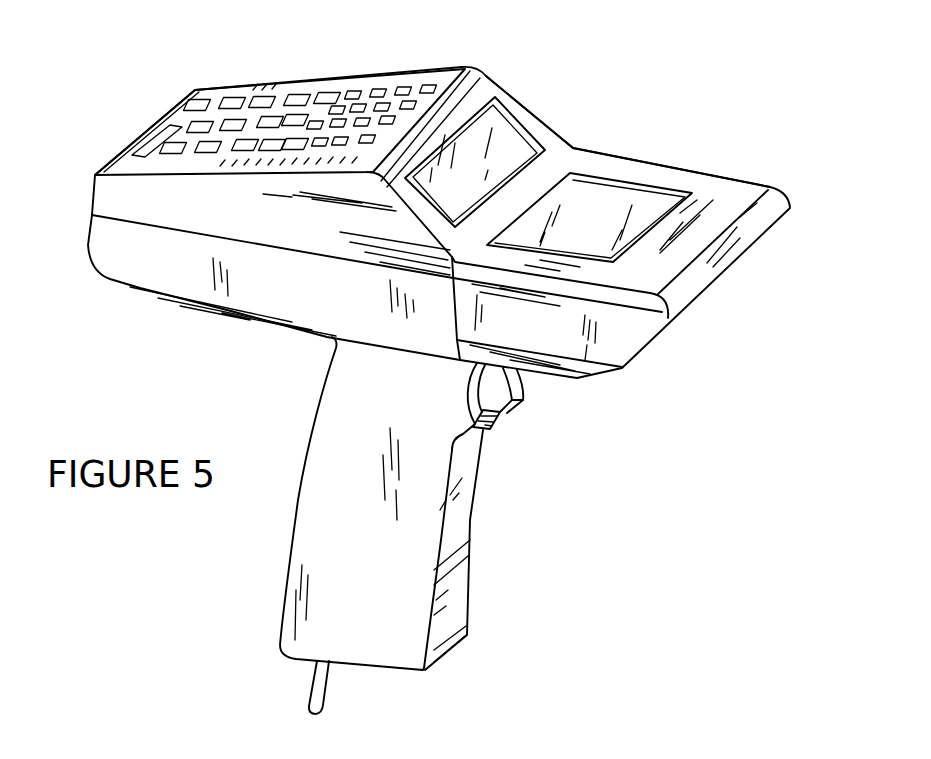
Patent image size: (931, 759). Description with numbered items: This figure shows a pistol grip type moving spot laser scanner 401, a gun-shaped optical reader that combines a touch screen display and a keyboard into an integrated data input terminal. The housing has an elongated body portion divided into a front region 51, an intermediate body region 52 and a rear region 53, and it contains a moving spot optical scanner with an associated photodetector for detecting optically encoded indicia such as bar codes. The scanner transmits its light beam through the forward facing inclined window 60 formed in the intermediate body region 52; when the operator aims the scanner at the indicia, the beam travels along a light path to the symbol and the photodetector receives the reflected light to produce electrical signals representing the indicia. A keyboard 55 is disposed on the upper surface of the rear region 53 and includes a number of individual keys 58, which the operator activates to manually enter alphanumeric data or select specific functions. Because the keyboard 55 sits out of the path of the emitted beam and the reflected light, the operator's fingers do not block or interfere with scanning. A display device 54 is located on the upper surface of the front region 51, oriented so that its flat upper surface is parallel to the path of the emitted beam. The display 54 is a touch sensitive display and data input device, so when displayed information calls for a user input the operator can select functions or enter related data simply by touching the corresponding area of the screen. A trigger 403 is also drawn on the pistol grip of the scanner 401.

The front region 51 is at (732, 170).
The intermediate body region 52 is at (577, 141).
The rear region 53 is at (254, 75).
The display device 54 is at (603, 203).
The keyboard 55 is at (317, 88).
The keys 58 is at (197, 100).
The forward facing inclined window 60 is at (507, 132).
The pistol grip type moving spot laser scanner 401 is at (232, 361).
The trigger 403 is at (521, 419).